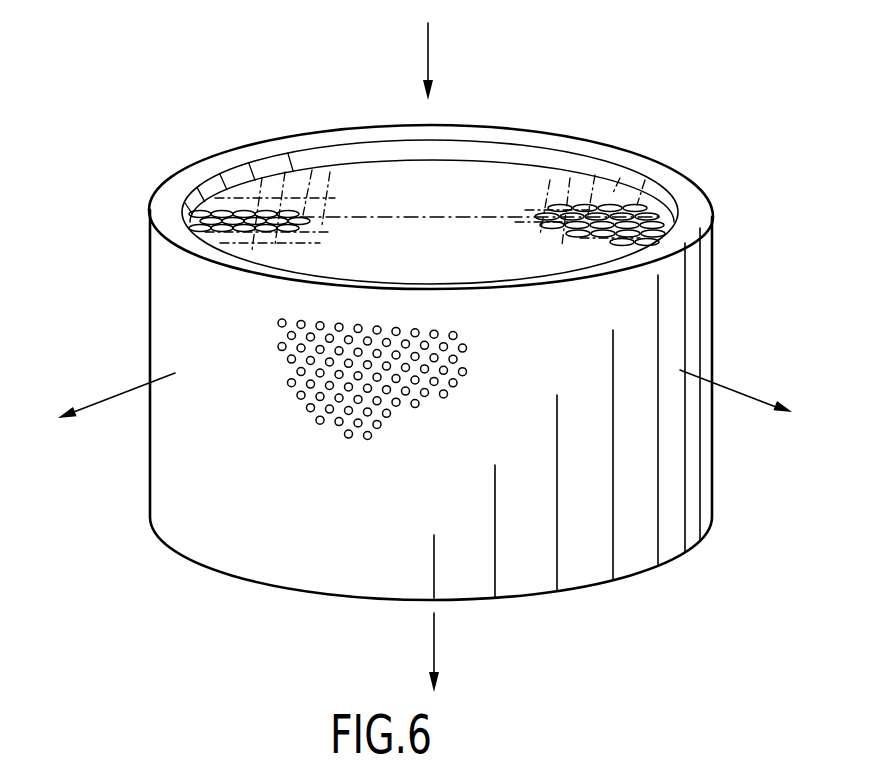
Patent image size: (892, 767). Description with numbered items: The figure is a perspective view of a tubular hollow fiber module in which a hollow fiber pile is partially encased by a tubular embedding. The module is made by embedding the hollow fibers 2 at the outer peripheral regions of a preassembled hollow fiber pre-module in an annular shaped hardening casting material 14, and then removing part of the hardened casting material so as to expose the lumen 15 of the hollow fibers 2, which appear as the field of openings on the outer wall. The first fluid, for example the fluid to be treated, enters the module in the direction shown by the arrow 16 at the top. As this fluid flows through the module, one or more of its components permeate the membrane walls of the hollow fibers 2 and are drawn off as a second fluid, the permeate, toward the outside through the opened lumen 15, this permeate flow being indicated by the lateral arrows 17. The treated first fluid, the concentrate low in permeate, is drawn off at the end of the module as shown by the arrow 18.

The hollow fibers 2 is at (612, 206).
The annular shaped hardening casting material 14 is at (692, 195).
The lumen 15 is at (453, 387).
The arrow 16 is at (430, 49).
The lateral arrows 17 is at (105, 395).
The arrow 18 is at (435, 645).